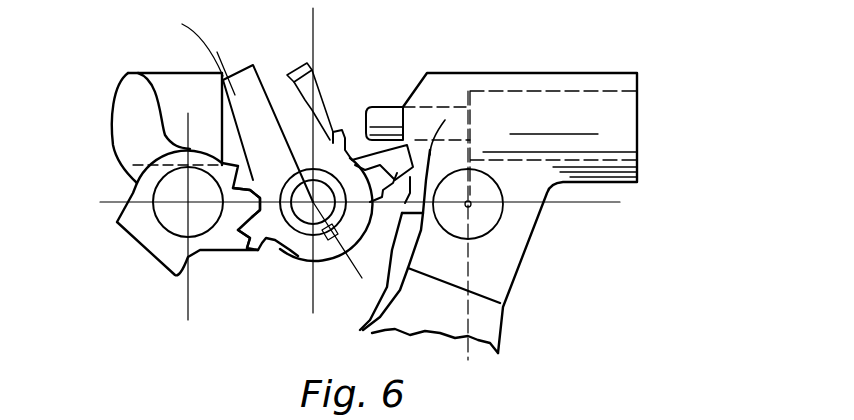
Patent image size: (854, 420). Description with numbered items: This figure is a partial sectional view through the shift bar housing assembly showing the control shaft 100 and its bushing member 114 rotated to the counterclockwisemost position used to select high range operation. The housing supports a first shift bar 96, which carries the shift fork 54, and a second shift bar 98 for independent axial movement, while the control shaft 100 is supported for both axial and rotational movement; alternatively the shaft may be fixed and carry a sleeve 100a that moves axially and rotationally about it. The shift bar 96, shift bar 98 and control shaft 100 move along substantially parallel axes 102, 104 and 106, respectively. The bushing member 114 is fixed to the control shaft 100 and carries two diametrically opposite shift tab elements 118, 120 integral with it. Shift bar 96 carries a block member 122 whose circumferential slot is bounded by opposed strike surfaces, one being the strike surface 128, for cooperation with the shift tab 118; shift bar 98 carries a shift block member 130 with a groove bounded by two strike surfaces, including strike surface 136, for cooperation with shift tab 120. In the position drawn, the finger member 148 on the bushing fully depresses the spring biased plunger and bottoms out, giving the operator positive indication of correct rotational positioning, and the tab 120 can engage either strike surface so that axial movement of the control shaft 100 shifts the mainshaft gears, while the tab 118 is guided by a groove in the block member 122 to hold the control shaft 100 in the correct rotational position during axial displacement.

The shift fork 54 is at (493, 318).
The first shift bar 96 is at (490, 186).
The second shift bar 98 is at (163, 210).
The control shaft 100 is at (315, 175).
The sleeve 100a is at (345, 150).
The axis 102 is at (468, 206).
The axis 104 is at (188, 202).
The axis 106 is at (313, 202).
The bushing member 114 is at (332, 168).
The shift tab element 118 is at (433, 137).
The shift tab element 120 is at (251, 210).
The block member 122 is at (430, 158).
The strike surface 128 is at (397, 265).
The shift block member 130 is at (148, 182).
The strike surface 136 is at (242, 232).
The finger member 148 is at (190, 30).